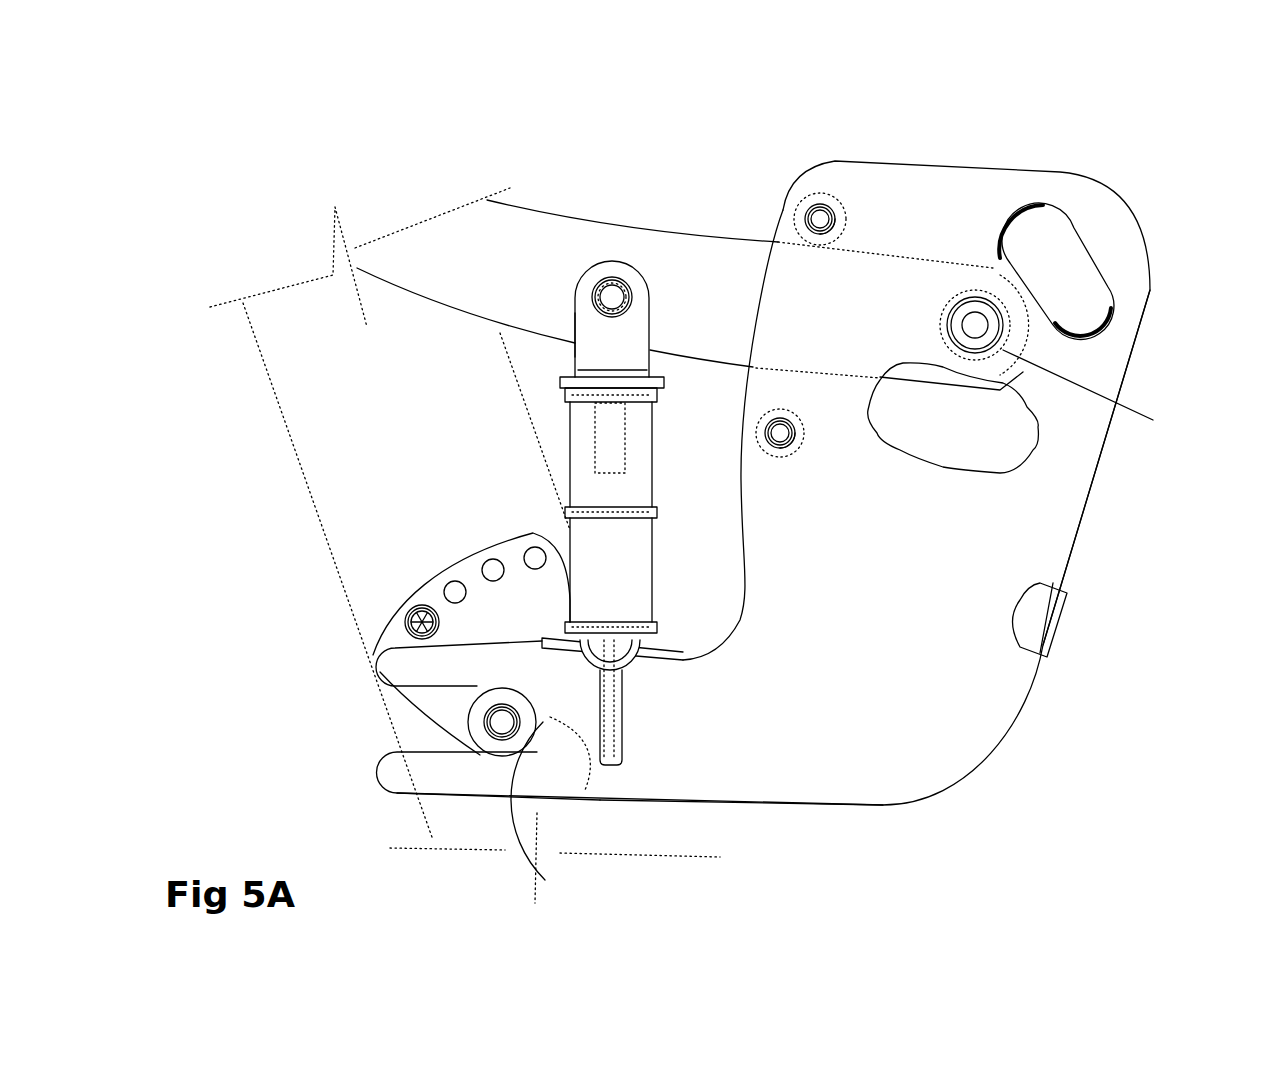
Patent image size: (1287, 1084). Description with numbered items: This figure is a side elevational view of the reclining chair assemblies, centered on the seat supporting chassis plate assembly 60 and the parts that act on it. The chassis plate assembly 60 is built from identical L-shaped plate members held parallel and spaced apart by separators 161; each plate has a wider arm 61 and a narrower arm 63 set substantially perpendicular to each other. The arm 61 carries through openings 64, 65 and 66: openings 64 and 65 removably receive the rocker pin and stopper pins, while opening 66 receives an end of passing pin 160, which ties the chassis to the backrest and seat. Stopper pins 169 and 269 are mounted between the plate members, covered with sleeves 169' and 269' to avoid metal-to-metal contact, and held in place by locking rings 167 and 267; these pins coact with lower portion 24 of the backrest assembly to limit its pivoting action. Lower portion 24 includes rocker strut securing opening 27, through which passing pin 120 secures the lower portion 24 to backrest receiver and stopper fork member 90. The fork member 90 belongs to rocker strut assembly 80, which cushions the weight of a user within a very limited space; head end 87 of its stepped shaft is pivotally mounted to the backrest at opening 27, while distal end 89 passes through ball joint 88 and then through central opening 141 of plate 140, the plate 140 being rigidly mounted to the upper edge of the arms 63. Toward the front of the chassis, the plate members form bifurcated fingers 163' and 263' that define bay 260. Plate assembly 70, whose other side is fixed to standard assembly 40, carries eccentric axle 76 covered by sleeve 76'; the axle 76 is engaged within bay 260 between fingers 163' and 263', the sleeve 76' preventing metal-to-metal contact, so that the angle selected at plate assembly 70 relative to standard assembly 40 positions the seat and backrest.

The lower portion 24 is at (670, 227).
The rocker strut securing opening 27 is at (612, 293).
The passing pin 120 is at (600, 295).
The backrest receiver and stopper fork member 90 is at (575, 313).
The head end 87 is at (597, 362).
The plate 140 is at (453, 562).
The central opening 141 is at (610, 648).
The standard assembly 40 is at (318, 522).
The plate assembly 70 is at (370, 632).
The bifurcated finger 163' is at (374, 652).
The sleeve 76' is at (426, 735).
The axle 76 is at (399, 731).
The bifurcated finger 263' is at (402, 794).
The bay 260 is at (561, 817).
The distal end 89 is at (610, 767).
The arm 63 is at (650, 783).
The ball joint 88 is at (633, 667).
The rocker strut assembly 80 is at (662, 578).
The seat supporting chassis plate assembly 60 is at (978, 785).
The separators 161 is at (1057, 623).
The stopper pin 269 is at (985, 512).
The locking ring 267 is at (798, 435).
The sleeve 269' is at (832, 497).
The through opening 64 is at (1033, 437).
The through opening 66 is at (1109, 396).
The arm 61 is at (1117, 370).
The through opening 65 is at (1113, 292).
The passing pin 160 is at (975, 322).
The locking ring 167 is at (807, 207).
The stopper pin 169 is at (919, 167).
The sleeve 169' is at (865, 172).